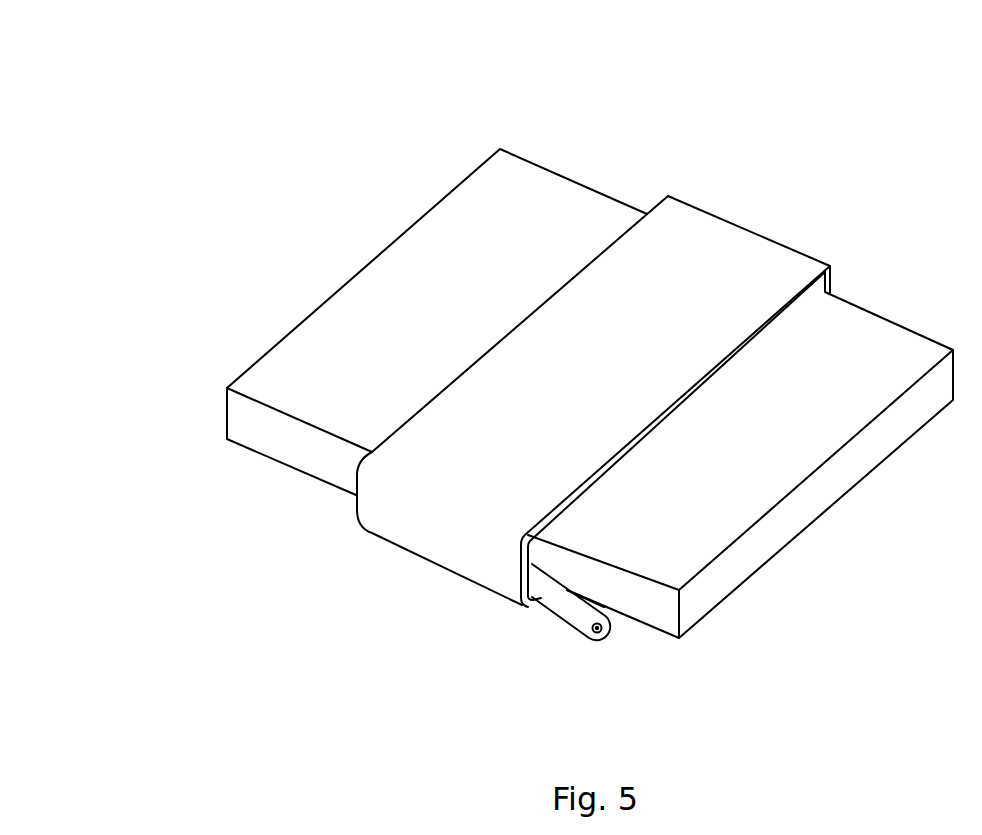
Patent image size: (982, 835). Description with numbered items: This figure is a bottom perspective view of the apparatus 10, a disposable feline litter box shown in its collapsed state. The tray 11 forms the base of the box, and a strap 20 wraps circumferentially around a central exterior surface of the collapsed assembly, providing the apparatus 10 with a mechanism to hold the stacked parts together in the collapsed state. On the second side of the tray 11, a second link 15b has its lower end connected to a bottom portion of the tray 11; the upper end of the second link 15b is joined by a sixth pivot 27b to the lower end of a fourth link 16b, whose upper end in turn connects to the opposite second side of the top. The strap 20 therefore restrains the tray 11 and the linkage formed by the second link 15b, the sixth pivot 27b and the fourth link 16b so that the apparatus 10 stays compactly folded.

The apparatus 10 is at (123, 107).
The strap 20 is at (732, 242).
The tray 11 is at (755, 473).
The second link 15b is at (604, 607).
The fourth link 16b is at (560, 602).
The sixth pivot 27b is at (602, 633).